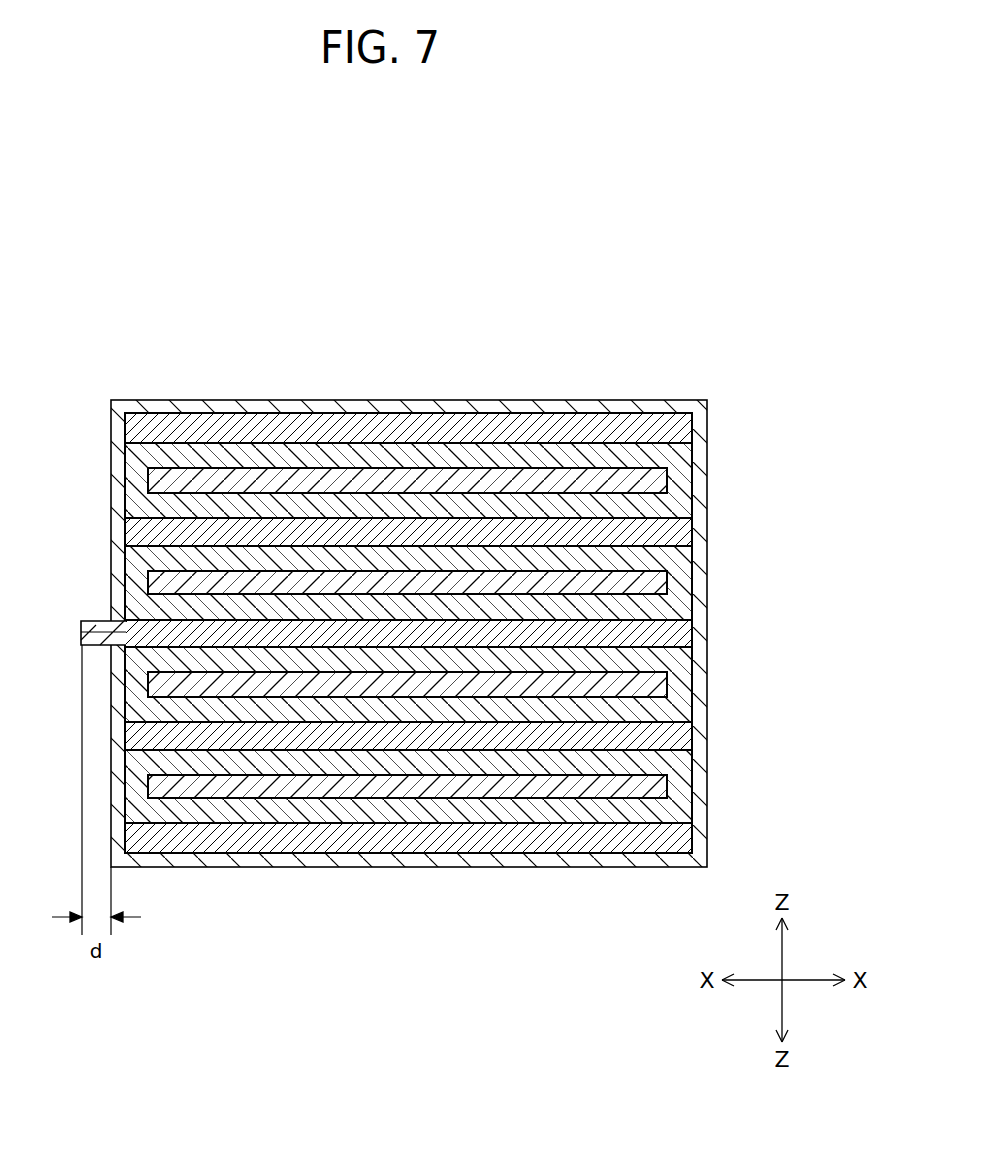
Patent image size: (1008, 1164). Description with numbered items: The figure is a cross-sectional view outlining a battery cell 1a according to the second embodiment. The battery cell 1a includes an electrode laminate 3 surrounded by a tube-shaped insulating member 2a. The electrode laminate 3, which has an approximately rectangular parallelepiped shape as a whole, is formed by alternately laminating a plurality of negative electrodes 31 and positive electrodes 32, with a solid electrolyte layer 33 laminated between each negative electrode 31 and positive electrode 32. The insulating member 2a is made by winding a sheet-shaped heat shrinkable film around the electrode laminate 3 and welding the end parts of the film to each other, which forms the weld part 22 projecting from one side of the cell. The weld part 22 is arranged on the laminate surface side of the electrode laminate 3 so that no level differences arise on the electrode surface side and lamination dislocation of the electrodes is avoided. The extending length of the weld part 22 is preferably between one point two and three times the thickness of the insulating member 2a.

The battery cell 1a is at (800, 232).
The insulating member 2a is at (384, 399).
The electrode laminate 3 is at (738, 641).
The weld part 22 is at (93, 620).
The negative electrode 31 is at (688, 423).
The positive electrode 32 is at (657, 480).
The solid electrolyte layer 33 is at (676, 457).